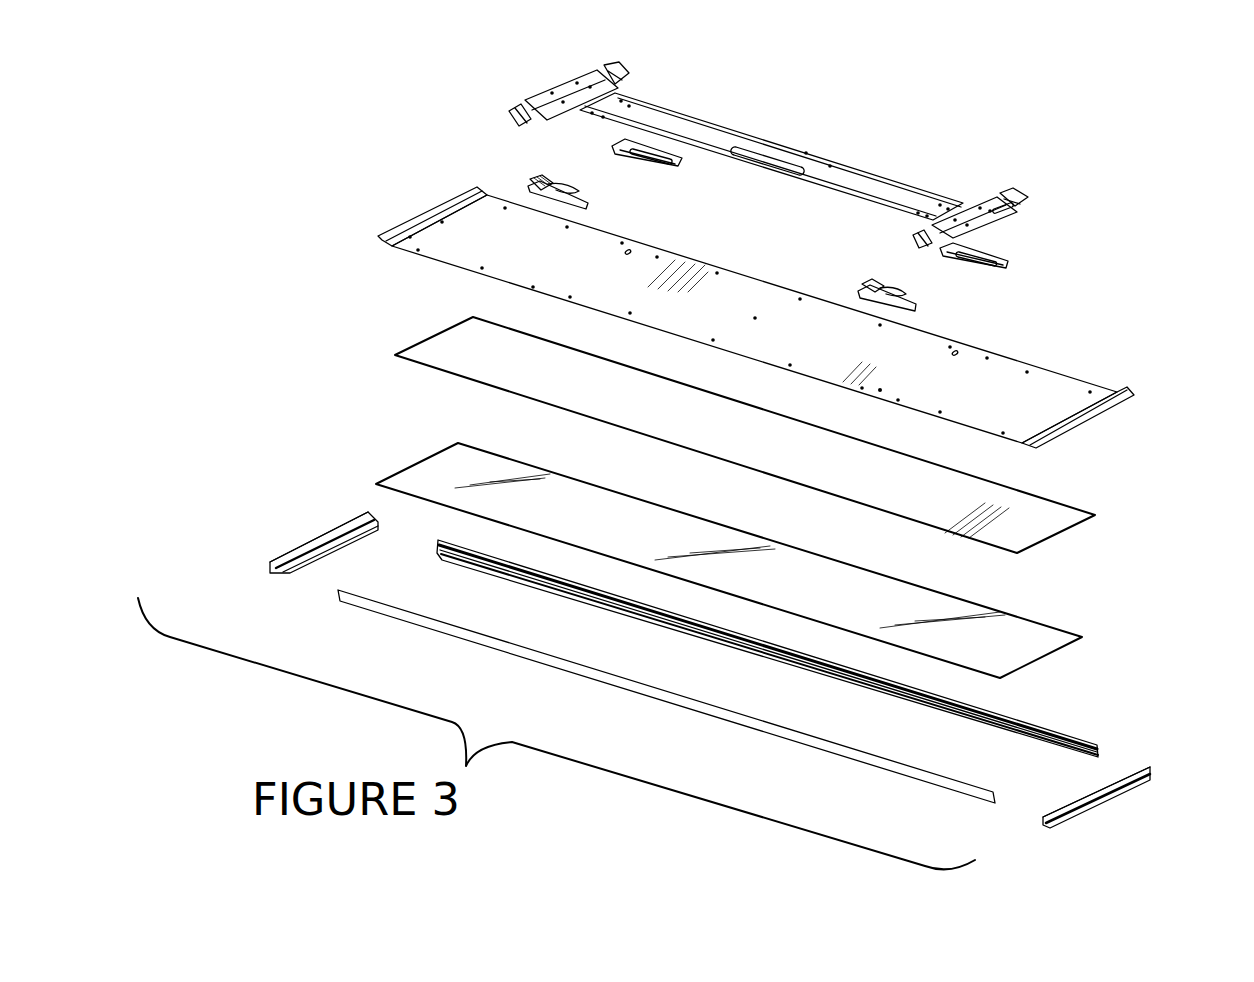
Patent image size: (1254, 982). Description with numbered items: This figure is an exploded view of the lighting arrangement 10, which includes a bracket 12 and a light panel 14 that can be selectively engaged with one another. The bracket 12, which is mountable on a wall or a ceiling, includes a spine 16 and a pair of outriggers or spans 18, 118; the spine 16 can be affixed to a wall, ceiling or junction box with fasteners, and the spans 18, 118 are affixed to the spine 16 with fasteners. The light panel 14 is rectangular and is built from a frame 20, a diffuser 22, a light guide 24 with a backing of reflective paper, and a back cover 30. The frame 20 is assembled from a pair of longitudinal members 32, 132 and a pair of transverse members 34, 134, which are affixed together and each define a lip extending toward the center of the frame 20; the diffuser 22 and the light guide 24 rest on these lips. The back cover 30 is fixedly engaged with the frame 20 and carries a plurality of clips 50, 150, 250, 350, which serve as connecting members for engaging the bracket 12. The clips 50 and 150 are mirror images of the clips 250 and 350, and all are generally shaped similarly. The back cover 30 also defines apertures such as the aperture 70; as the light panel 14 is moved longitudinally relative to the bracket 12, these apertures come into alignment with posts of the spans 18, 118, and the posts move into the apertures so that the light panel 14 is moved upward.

The lighting arrangement 10 is at (386, 128).
The bracket 12 is at (1005, 233).
The light panel 14 is at (728, 726).
The spine 16 is at (845, 170).
The span 18 is at (1023, 200).
The frame 20 is at (278, 612).
The diffuser 22 is at (1055, 661).
The light guide 24 is at (1062, 543).
The back cover 30 is at (1089, 422).
The longitudinal member 32 is at (717, 642).
The transverse member 34 is at (317, 543).
The clip 50 is at (857, 282).
The aperture 70 is at (882, 390).
The span 118 is at (577, 82).
The longitudinal member 132 is at (447, 628).
The transverse member 134 is at (1090, 807).
The clip 150 is at (536, 177).
The clip 250 is at (663, 165).
The clip 350 is at (1005, 277).